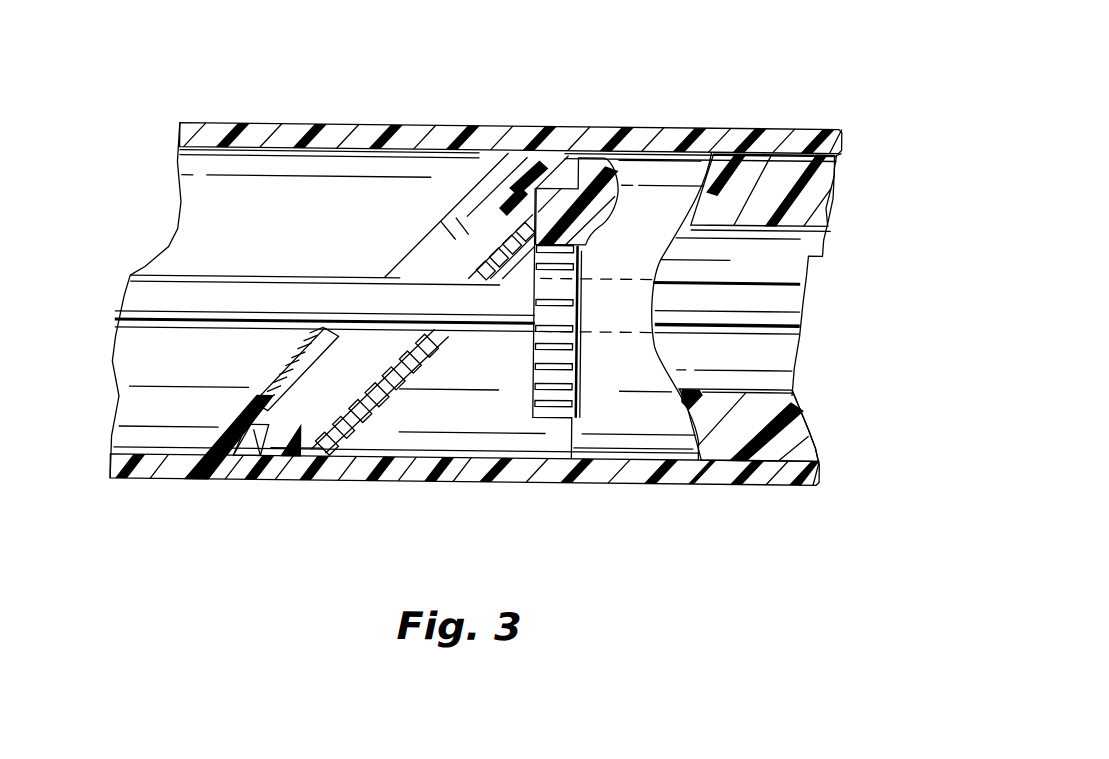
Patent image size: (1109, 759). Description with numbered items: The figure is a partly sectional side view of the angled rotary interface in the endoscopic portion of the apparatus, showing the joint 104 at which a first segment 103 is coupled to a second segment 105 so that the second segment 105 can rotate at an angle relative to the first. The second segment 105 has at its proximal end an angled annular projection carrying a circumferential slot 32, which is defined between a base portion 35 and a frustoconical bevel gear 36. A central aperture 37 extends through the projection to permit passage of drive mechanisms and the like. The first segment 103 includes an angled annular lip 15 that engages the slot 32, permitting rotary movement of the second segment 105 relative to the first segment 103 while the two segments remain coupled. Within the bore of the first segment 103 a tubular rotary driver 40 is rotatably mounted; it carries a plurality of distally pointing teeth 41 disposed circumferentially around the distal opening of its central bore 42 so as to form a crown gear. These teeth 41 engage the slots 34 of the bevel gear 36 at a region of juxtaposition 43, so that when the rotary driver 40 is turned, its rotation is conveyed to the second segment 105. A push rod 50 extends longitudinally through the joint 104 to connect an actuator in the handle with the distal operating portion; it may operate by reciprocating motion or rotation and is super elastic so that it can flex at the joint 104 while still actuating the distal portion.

The first segment 103 is at (693, 513).
The second segment 105 is at (275, 120).
The angled annular lip 15 is at (548, 125).
The push rod 50 is at (207, 300).
The base portion 35 is at (482, 165).
The circumferential slot 32 is at (500, 196).
The central aperture 37 is at (438, 269).
The frustoconical bevel gear 36 is at (300, 425).
The slots 34 is at (305, 470).
The region of juxtaposition 43 is at (528, 272).
The rotary driver 40 is at (640, 237).
The teeth 41 is at (540, 365).
The joint 104 is at (550, 162).
The central bore 42 is at (778, 250).